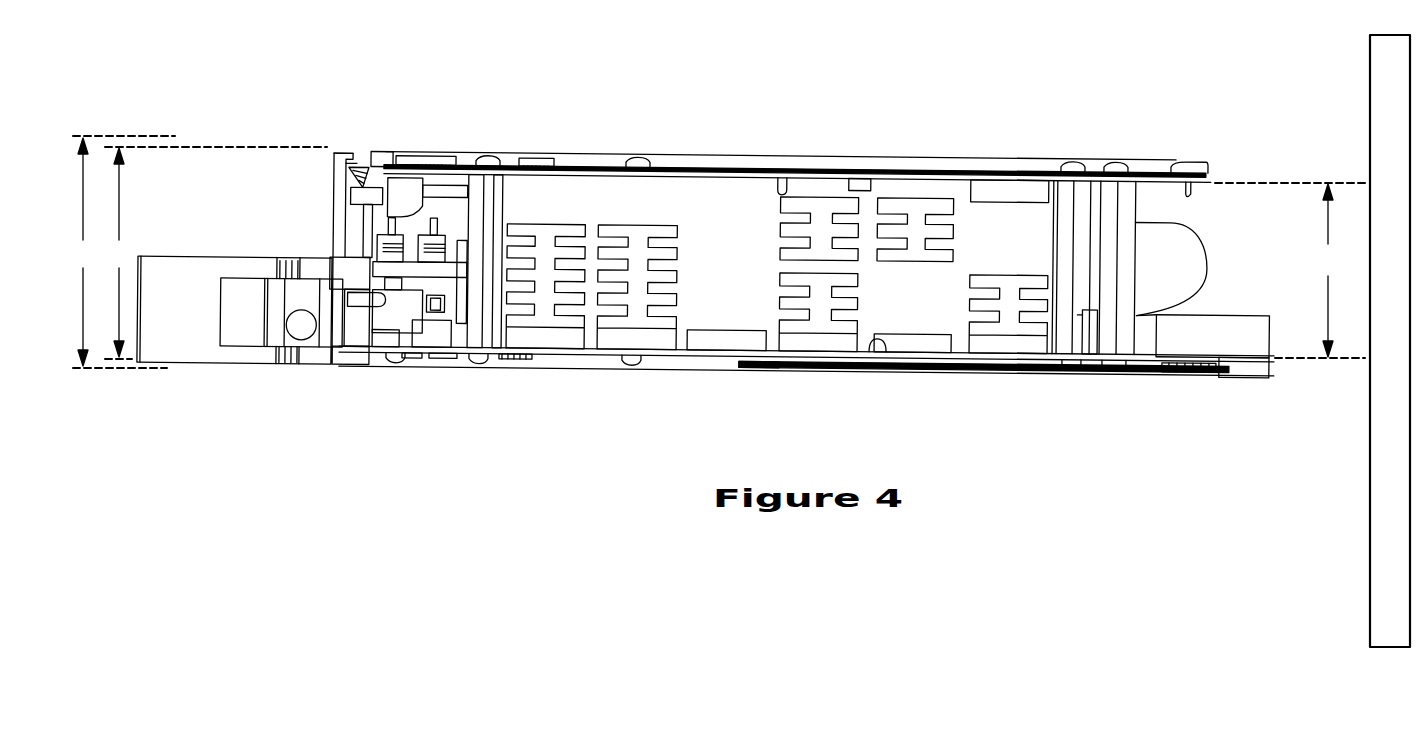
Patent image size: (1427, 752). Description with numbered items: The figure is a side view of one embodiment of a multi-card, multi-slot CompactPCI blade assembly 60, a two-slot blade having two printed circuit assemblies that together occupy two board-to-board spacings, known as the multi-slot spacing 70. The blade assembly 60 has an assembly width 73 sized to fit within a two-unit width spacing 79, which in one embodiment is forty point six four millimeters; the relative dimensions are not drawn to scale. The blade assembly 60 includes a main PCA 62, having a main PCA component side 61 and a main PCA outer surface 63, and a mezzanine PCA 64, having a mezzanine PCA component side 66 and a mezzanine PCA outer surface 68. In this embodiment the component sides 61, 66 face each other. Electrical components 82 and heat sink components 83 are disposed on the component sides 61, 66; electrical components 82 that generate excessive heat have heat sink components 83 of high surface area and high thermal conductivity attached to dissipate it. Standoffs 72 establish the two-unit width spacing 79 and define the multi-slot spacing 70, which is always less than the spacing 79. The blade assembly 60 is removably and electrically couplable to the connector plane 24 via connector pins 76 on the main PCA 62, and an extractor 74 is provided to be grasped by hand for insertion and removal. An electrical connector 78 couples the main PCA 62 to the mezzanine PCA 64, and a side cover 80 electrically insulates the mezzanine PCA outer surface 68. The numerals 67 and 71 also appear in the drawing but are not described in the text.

The connector plane 24 is at (1370, 125).
The multi-card, multi-slot CompactPCI blade assembly 60 is at (441, 97).
The main PCA component side 61 is at (883, 354).
The main PCA 62 is at (840, 370).
The main PCA outer surface 63 is at (985, 363).
The mezzanine PCA 64 is at (857, 160).
The mezzanine PCA component side 66 is at (795, 176).
The housing end block 67 is at (460, 160).
The mezzanine PCA outer surface 68 is at (723, 168).
The multi-slot spacing 70 is at (1290, 270).
The connector interface 71 is at (357, 311).
The standoffs 72 is at (485, 159).
The assembly width 73 is at (215, 253).
The extractor 74 is at (240, 310).
The connector pins 76 is at (1250, 376).
The electrical connector 78 is at (1203, 258).
The two-unit width spacing 79 is at (122, 252).
The side cover 80 is at (952, 160).
The electrical components 82 is at (883, 190).
The heat sink components 83 is at (635, 232).